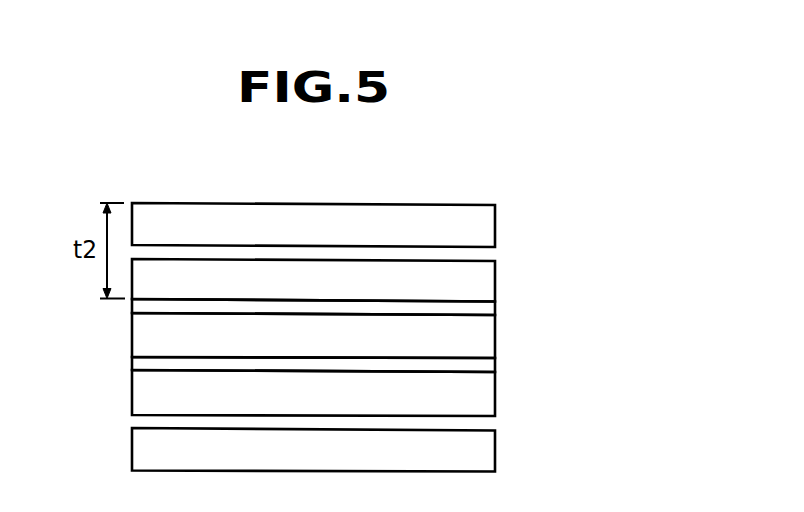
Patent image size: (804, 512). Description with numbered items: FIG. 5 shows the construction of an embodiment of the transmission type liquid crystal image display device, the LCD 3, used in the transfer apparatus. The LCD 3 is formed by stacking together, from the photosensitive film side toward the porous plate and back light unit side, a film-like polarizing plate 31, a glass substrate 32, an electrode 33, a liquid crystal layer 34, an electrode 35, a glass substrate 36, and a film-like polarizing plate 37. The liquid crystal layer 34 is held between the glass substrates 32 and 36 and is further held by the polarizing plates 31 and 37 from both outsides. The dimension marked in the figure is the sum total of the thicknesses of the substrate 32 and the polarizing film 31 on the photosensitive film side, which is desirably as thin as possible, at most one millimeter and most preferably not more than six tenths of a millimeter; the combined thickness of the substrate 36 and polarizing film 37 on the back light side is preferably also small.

The LCD 3 is at (493, 178).
The film-like polarizing plate 31 is at (488, 223).
The glass substrate 32 is at (488, 280).
The electrode 33 is at (488, 310).
The liquid crystal layer 34 is at (480, 338).
The electrode 35 is at (490, 365).
The glass substrate 36 is at (490, 398).
The film-like polarizing plate 37 is at (490, 455).